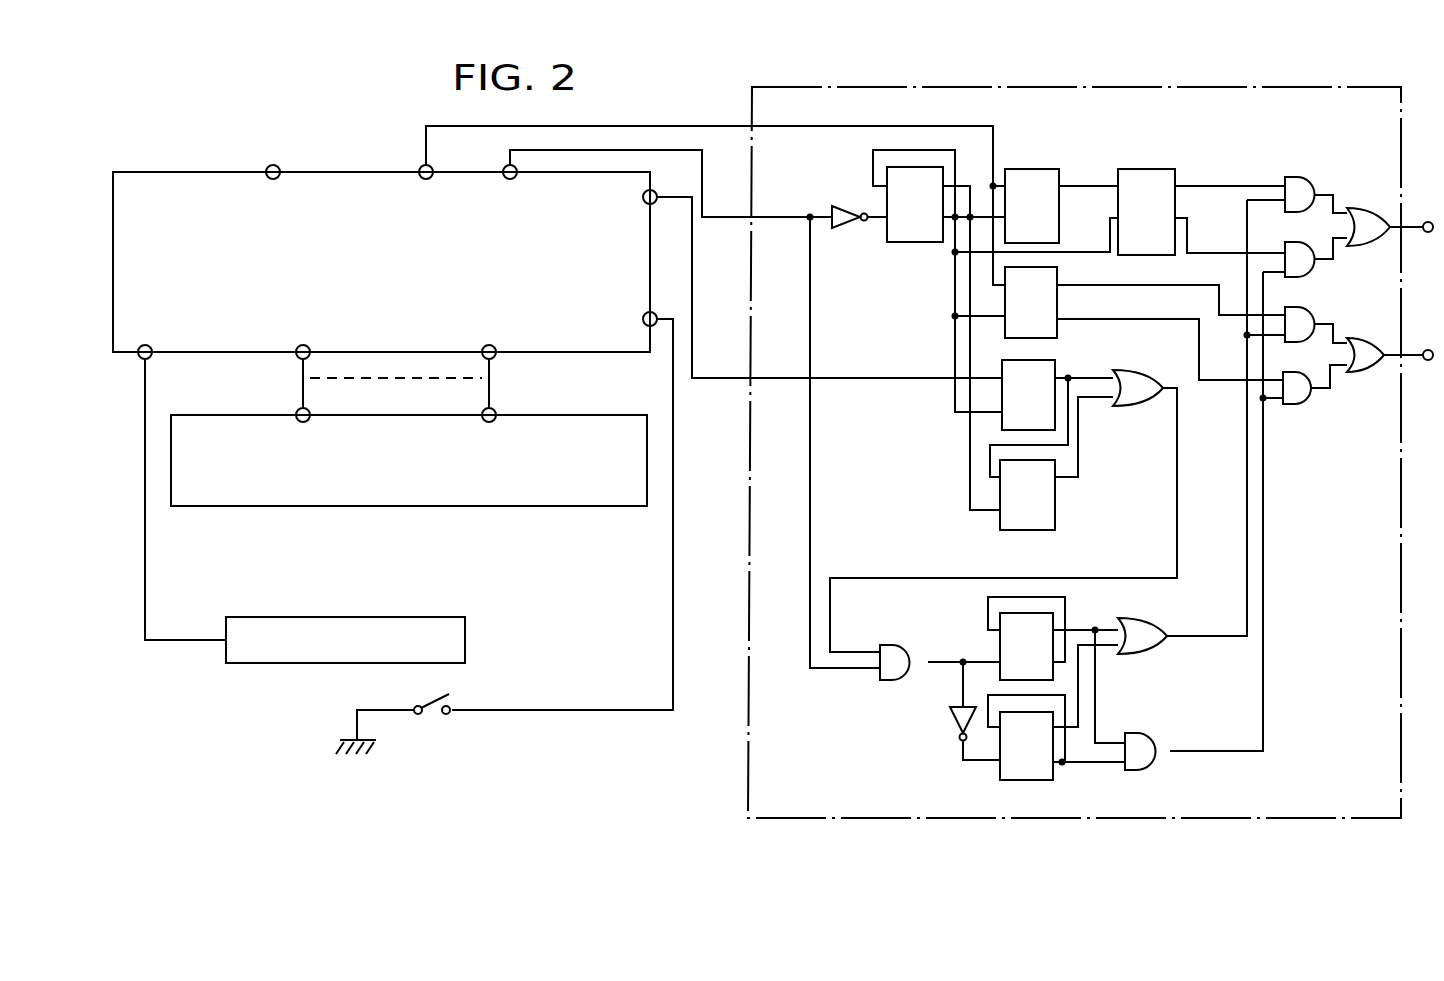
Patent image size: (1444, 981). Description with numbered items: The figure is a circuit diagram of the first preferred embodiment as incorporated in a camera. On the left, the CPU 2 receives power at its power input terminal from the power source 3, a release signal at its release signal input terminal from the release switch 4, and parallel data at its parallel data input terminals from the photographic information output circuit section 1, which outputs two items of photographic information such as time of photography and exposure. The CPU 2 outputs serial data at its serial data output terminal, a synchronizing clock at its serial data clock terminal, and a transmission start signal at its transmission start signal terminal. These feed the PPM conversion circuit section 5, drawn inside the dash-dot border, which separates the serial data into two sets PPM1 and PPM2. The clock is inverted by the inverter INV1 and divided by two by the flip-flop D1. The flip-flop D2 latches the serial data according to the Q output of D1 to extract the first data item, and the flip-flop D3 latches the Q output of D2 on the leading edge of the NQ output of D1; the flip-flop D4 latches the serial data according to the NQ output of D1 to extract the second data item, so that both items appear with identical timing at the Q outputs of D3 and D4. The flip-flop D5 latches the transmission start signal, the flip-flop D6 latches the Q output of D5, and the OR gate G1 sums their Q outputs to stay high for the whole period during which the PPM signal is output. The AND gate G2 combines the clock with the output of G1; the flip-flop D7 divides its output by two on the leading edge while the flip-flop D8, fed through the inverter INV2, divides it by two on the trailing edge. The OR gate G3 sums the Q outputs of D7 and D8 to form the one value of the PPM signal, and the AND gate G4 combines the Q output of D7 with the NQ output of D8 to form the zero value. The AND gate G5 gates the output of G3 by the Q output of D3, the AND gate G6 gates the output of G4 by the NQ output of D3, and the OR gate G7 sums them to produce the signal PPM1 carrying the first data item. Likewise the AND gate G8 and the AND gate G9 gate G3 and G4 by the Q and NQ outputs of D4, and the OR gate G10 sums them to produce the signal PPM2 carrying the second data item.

The photographic information output circuit section 1 is at (404, 506).
The CPU 2 is at (377, 172).
The power source 3 is at (266, 663).
The release switch 4 is at (446, 716).
The PPM conversion circuit section 5 is at (745, 762).
The inverter INV1 is at (828, 210).
The inverter INV2 is at (948, 726).
The flip-flop D1 is at (904, 242).
The flip-flop D2 is at (1059, 178).
The flip-flop D3 is at (1176, 178).
The flip-flop D4 is at (1059, 300).
The flip-flop D5 is at (1050, 365).
The flip-flop D6 is at (1055, 508).
The flip-flop D7 is at (1000, 648).
The flip-flop D8 is at (1055, 776).
The OR gate G1 is at (1130, 400).
The AND gate G2 is at (900, 682).
The OR gate G3 is at (1148, 648).
The AND gate G4 is at (1160, 746).
The AND gate G5 is at (1304, 178).
The AND gate G6 is at (1300, 278).
The OR gate G7 is at (1373, 247).
The AND gate G8 is at (1305, 316).
The AND gate G9 is at (1300, 406).
The OR gate G10 is at (1372, 374).
The PPM signal PPM1 is at (1425, 217).
The PPM signal PPM2 is at (1426, 364).